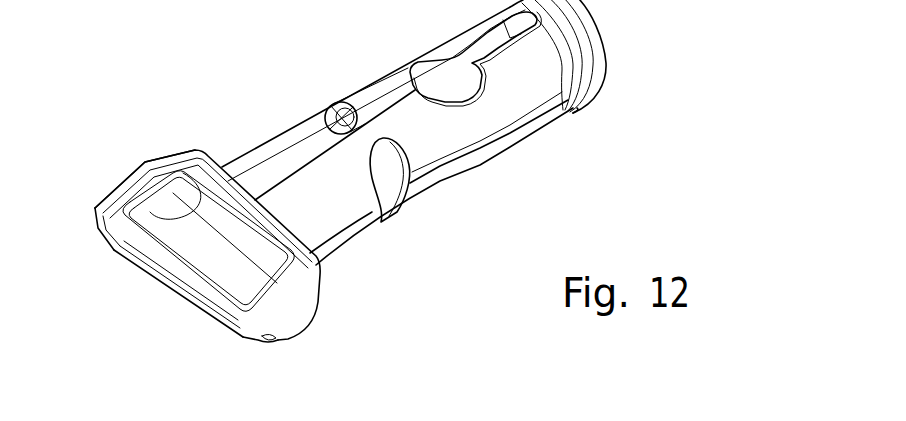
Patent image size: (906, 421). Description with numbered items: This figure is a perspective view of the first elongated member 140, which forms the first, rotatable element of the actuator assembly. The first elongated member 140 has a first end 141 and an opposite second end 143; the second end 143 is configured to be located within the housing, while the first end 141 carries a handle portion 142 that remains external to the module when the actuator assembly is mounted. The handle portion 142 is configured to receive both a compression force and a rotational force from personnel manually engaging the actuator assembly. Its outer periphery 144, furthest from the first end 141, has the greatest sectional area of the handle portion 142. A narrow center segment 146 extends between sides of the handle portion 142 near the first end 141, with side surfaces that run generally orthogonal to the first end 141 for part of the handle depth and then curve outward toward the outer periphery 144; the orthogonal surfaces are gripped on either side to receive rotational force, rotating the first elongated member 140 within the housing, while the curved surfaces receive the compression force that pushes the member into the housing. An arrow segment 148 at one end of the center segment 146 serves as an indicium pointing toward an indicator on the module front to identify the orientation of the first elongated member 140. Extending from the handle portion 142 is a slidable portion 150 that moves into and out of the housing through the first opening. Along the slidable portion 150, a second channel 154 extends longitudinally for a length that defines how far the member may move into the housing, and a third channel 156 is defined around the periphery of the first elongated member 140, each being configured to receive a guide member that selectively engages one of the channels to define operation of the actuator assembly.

The first elongated member 140 is at (80, 103).
The first end 141 is at (230, 318).
The handle portion 142 is at (312, 300).
The second end 143 is at (607, 57).
The outer periphery 144 is at (213, 158).
The center segment 146 is at (180, 297).
The arrow segment 148 is at (100, 207).
The slidable portion 150 is at (277, 137).
The second channel 154 is at (377, 98).
The third channel 156 is at (387, 217).